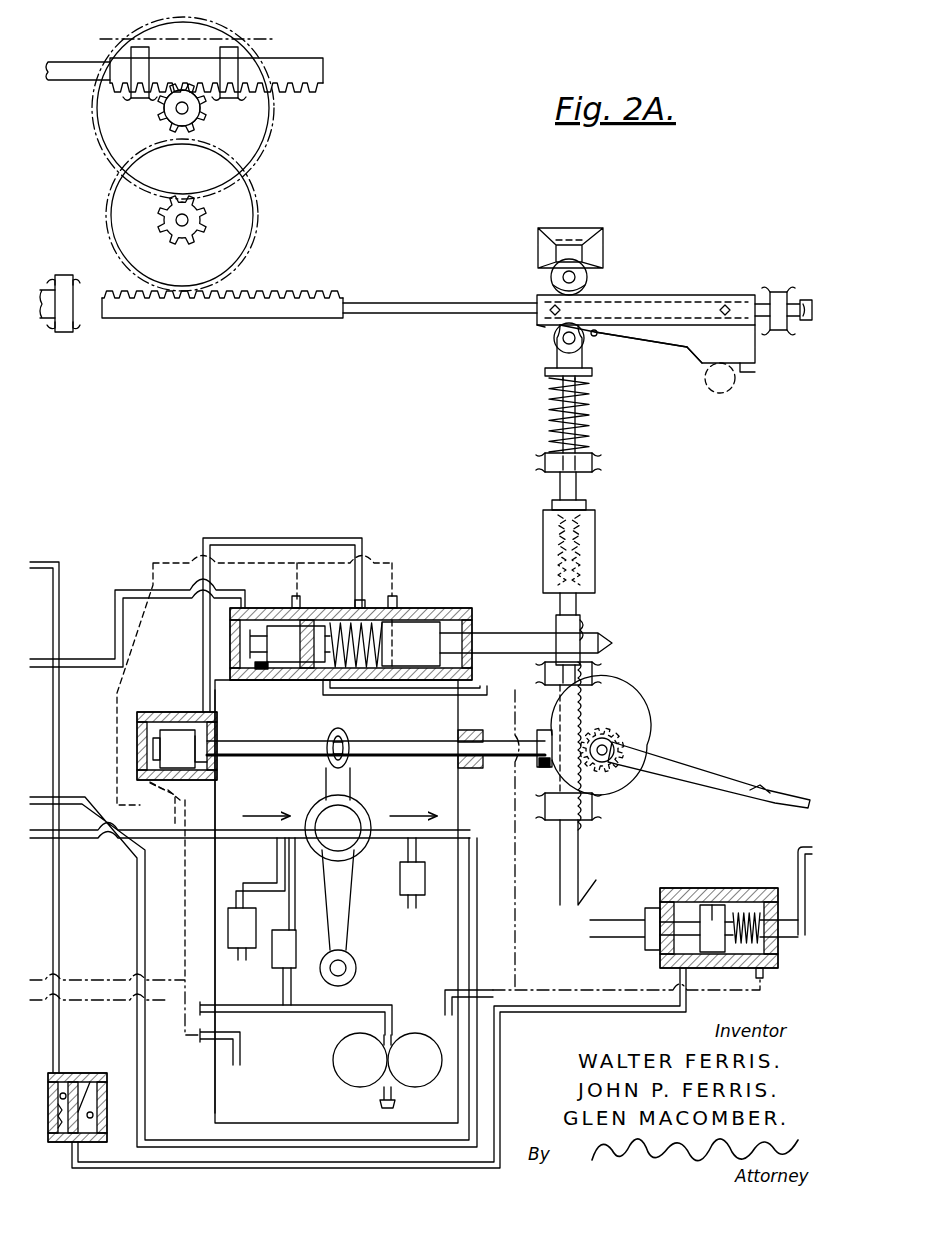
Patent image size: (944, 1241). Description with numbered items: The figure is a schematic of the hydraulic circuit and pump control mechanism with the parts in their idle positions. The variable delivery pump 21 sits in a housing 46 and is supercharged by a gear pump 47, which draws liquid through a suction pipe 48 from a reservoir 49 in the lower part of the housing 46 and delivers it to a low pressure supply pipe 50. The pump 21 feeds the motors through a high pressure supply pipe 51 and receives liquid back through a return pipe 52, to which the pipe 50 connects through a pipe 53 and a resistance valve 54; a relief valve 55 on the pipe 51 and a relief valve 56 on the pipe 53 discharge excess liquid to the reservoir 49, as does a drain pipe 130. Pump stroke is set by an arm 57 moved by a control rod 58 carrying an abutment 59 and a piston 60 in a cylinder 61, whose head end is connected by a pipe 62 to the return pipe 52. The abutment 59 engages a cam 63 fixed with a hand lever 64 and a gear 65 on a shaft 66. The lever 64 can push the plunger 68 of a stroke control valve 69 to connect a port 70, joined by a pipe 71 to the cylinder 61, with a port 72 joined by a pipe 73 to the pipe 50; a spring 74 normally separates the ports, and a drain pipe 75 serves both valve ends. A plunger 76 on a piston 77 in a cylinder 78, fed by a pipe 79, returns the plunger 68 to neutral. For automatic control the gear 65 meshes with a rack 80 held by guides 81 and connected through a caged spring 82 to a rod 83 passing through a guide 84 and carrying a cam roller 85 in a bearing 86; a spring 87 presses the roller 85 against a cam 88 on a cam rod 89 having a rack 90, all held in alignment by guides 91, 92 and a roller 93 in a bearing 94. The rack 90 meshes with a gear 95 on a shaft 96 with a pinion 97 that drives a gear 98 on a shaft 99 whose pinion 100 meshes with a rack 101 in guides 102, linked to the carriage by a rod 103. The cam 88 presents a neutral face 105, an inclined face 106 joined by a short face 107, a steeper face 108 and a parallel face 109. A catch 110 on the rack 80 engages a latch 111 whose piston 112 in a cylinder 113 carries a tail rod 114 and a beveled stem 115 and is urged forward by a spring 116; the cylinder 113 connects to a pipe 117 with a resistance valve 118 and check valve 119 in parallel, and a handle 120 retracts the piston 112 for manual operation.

The pump 21 is at (338, 828).
The housing 46 is at (215, 1115).
The gear pump 47 is at (387, 1060).
The suction pipe 48 is at (384, 1095).
The reservoir 49 is at (250, 1100).
The low pressure supply pipe 50 is at (256, 1005).
The high pressure supply pipe 51 is at (45, 797).
The return pipe 52 is at (85, 838).
The pipe 53 is at (280, 857).
The resistance valve 54 is at (290, 968).
The relief valve 55 is at (400, 880).
The relief valve 56 is at (240, 960).
The arm 57 is at (350, 782).
The control rod 58 is at (285, 741).
The abutment 59 is at (545, 730).
The piston 60 is at (178, 730).
The cylinder 61 is at (165, 712).
The pipe 62 is at (176, 793).
The cam 63 is at (642, 705).
The hand lever 64 is at (762, 762).
The gear 65 is at (620, 738).
The shaft 66 is at (605, 755).
The plunger 68 is at (427, 644).
The stroke control valve 69 is at (465, 608).
The port 70 is at (358, 612).
The pipe 71 is at (240, 536).
The port 72 is at (397, 608).
The pipe 73 is at (392, 563).
The helical compression spring 74 is at (340, 620).
The drain pipe 75 is at (495, 690).
The plunger 76 is at (290, 644).
The piston 77 is at (262, 670).
The cylinder 78 is at (280, 608).
The pipe 79 is at (100, 661).
The rack 80 is at (580, 622).
The stationary guides 81 is at (592, 670).
The caged spring 82 is at (595, 563).
The rod 83 is at (576, 485).
The stationary guide 84 is at (592, 462).
The cam roller 85 is at (554, 345).
The bearing 86 is at (582, 366).
The helical compression spring 87 is at (590, 412).
The cam 88 is at (732, 296).
The cam rod 89 is at (470, 303).
The rack 90 is at (222, 305).
The stationary guide 91 is at (779, 292).
The stationary guide 92 is at (64, 332).
The roller 93 is at (587, 277).
The stationary bearing 94 is at (595, 245).
The gear 95 is at (240, 245).
The shaft 96 is at (188, 220).
The pinion 97 is at (162, 225).
The gear 98 is at (272, 140).
The shaft 99 is at (186, 110).
The pinion 100 is at (160, 112).
The rack 101 is at (216, 75).
The stationary guides 102 is at (225, 45).
The rod 103 is at (80, 52).
The neutral face 105 is at (555, 330).
The inclined cam face 106 is at (672, 345).
The short inclined face 107 is at (598, 333).
The cam face 108 is at (695, 357).
The face 109 is at (752, 370).
The catch 110 is at (582, 895).
The latch 111 is at (680, 888).
The piston 112 is at (728, 884).
The cylinder 113 is at (750, 908).
The tail rod 114 is at (790, 937).
The stem 115 is at (640, 935).
The helical compression spring 116 is at (748, 962).
The pipe 117 is at (45, 562).
The high pressure resistance valve 118 is at (55, 1125).
The check valve 119 is at (90, 1112).
The handle 120 is at (797, 860).
The drain pipe 130 is at (200, 1035).